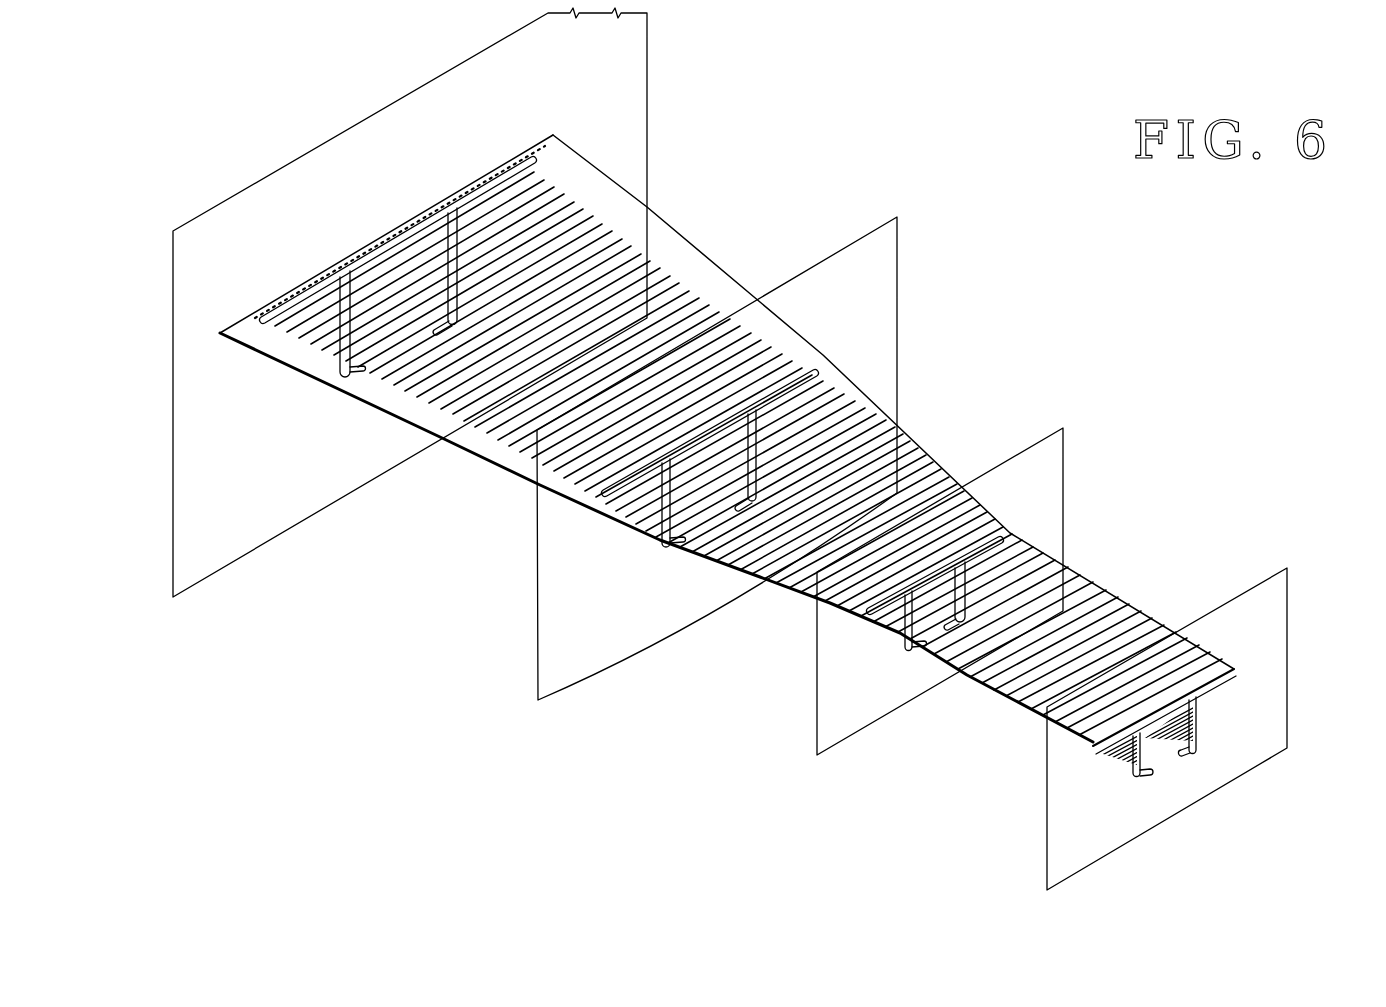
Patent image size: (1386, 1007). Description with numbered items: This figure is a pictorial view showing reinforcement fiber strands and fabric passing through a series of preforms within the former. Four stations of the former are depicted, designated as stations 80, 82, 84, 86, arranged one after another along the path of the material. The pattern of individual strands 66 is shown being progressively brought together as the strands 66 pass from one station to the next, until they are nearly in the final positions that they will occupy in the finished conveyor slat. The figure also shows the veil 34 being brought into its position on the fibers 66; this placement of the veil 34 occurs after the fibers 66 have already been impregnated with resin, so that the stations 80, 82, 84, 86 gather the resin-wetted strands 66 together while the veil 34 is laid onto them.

The veil 34 is at (715, 283).
The strands 66 is at (392, 278).
The station 80 is at (636, 106).
The station 82 is at (882, 320).
The station 84 is at (1043, 485).
The station 86 is at (1282, 628).